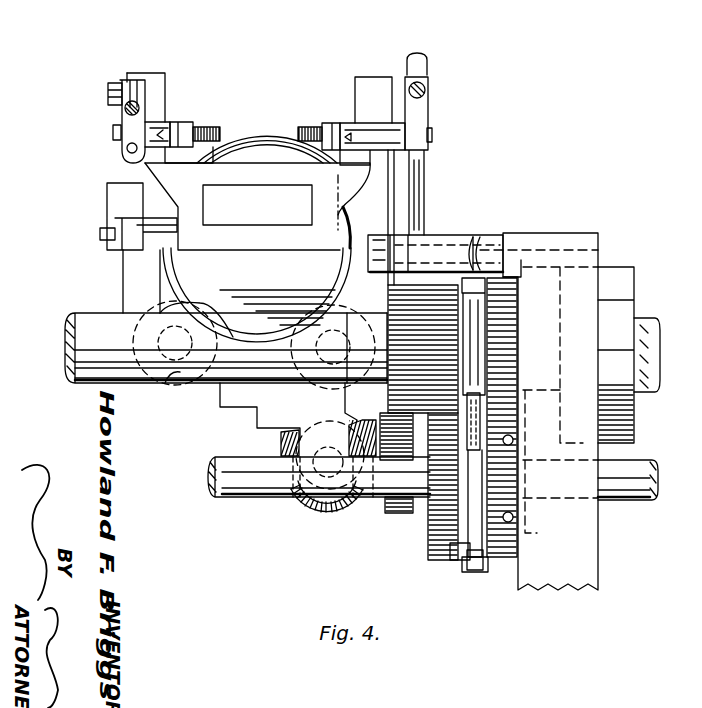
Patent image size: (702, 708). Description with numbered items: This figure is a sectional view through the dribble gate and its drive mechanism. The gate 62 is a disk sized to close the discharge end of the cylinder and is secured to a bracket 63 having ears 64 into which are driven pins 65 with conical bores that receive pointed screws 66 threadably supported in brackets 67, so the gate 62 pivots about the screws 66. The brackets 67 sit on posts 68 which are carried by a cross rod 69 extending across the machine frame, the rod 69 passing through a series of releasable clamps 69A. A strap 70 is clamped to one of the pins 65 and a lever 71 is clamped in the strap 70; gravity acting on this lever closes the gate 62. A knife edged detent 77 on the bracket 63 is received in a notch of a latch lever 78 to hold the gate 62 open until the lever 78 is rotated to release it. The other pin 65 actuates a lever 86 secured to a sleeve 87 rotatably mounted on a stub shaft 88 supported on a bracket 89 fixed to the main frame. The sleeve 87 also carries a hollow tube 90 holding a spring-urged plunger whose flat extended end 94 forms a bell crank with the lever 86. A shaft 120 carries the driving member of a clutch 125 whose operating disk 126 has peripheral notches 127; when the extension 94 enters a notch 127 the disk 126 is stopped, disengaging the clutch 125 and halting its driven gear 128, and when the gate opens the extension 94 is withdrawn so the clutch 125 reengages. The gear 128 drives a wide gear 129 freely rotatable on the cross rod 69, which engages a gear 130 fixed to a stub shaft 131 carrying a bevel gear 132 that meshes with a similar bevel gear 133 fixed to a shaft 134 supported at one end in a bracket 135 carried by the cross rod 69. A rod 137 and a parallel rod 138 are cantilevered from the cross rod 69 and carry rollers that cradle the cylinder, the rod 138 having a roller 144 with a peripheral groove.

The gate 62 is at (257, 252).
The bracket 63 is at (232, 160).
The ears 64 is at (162, 130).
The pins 65 is at (116, 140).
The pointed screws 66 is at (215, 128).
The brackets 67 is at (192, 126).
The posts 68 is at (156, 83).
The cross rod 69 is at (84, 354).
The releasable clamps 69A is at (628, 285).
The strap 70 is at (121, 116).
The lever 71 is at (126, 108).
The knife edged detent 77 is at (140, 240).
The latch lever 78 is at (115, 235).
The lever 86 is at (428, 62).
The sleeve 87 is at (443, 238).
The stub shaft 88 is at (362, 248).
The bracket 89 is at (577, 236).
The hollow tube 90 is at (477, 270).
The flat extended end 94 is at (487, 388).
The shaft 120 is at (608, 503).
The clutch 125 is at (469, 590).
The operating disk 126 is at (470, 552).
The notches 127 is at (465, 540).
The gear 128 is at (420, 550).
The wide gear 129 is at (400, 302).
The gear 130 is at (378, 522).
The stub shaft 131 is at (282, 448).
The bevel gear 132 is at (366, 508).
The bevel gear 133 is at (300, 506).
The shaft 134 is at (330, 455).
The bracket 135 is at (222, 406).
The rod 137 is at (322, 383).
The rod 138 is at (150, 340).
The roller 144 is at (160, 385).